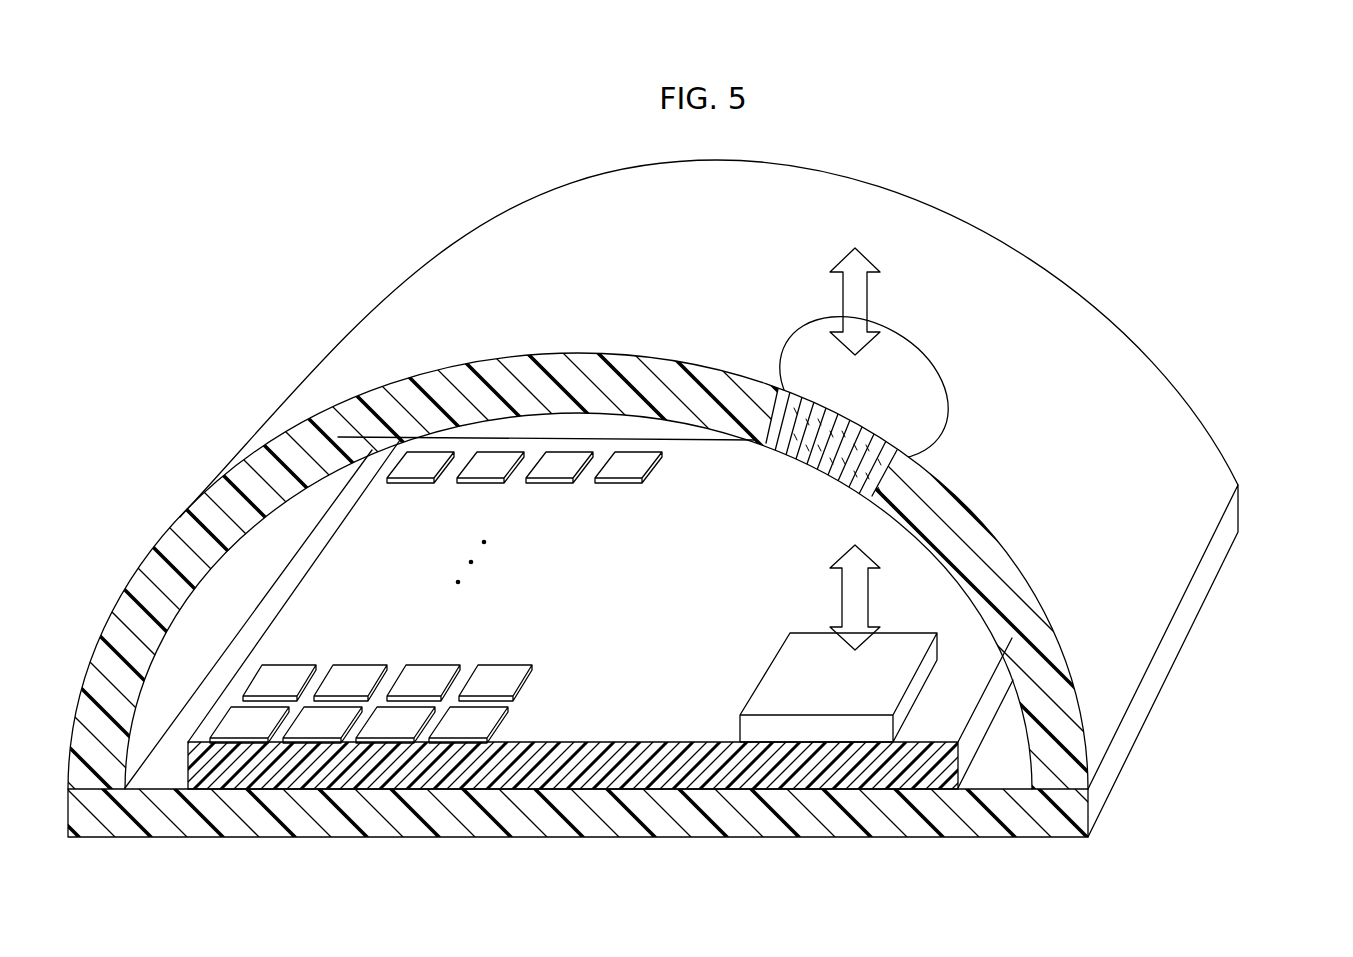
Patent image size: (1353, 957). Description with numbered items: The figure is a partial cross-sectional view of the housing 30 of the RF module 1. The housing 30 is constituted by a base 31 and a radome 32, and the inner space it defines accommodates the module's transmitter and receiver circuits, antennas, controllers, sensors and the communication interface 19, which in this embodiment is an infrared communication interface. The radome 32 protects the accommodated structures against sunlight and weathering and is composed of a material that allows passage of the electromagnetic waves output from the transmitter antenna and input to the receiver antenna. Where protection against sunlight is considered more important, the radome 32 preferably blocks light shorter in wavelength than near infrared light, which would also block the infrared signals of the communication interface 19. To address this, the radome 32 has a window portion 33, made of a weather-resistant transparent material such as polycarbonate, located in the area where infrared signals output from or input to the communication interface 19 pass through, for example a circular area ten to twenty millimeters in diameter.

The RF module 1 is at (1154, 203).
The communication interface 19 is at (790, 660).
The housing 30 is at (1272, 405).
The base 31 is at (1238, 507).
The radome 32 is at (1222, 436).
The window portion 33 is at (900, 365).